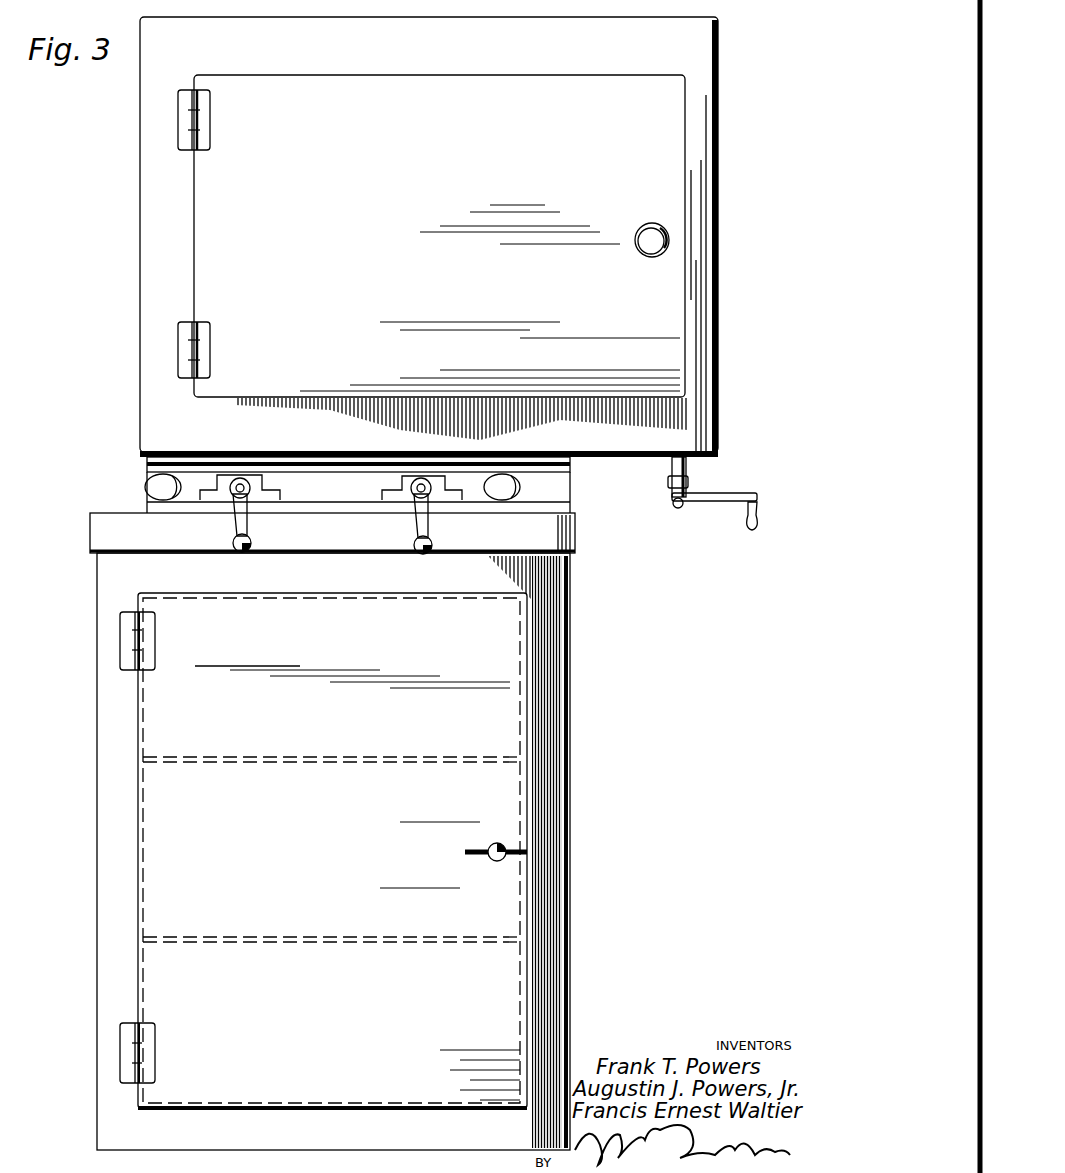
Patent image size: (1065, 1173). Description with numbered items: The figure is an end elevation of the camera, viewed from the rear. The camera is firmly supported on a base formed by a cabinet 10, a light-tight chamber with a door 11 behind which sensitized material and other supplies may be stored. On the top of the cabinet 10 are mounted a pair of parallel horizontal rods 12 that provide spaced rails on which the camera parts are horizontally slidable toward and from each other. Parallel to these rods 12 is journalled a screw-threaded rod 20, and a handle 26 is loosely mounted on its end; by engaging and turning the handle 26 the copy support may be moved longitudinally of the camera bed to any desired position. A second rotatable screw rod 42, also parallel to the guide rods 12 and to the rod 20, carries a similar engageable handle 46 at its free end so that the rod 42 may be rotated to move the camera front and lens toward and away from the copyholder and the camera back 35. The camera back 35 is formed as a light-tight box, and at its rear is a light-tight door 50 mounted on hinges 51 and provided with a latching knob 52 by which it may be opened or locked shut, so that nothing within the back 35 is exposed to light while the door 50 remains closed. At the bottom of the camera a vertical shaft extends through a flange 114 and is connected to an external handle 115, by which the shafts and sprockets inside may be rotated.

The cabinet 10 is at (560, 689).
The door 11 is at (513, 643).
The parallel horizontal rods 12 is at (146, 487).
The rod 20 is at (243, 480).
The handle 26 is at (250, 536).
The camera back 35 is at (703, 128).
The screw rod 42 is at (400, 487).
The handle 46 is at (432, 537).
The door 50 is at (439, 236).
The hinges 51 is at (206, 133).
The latching knob 52 is at (645, 258).
The flange 114 is at (688, 474).
The external handle 115 is at (722, 503).